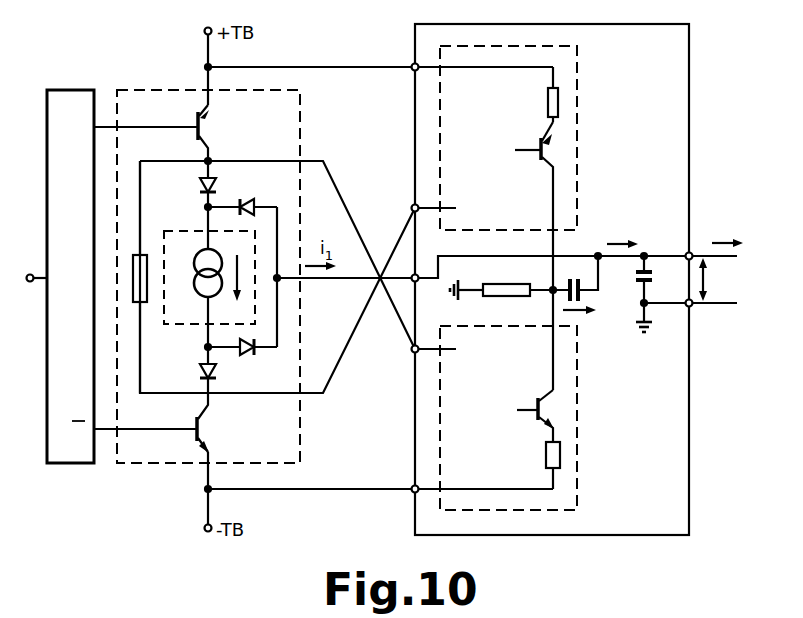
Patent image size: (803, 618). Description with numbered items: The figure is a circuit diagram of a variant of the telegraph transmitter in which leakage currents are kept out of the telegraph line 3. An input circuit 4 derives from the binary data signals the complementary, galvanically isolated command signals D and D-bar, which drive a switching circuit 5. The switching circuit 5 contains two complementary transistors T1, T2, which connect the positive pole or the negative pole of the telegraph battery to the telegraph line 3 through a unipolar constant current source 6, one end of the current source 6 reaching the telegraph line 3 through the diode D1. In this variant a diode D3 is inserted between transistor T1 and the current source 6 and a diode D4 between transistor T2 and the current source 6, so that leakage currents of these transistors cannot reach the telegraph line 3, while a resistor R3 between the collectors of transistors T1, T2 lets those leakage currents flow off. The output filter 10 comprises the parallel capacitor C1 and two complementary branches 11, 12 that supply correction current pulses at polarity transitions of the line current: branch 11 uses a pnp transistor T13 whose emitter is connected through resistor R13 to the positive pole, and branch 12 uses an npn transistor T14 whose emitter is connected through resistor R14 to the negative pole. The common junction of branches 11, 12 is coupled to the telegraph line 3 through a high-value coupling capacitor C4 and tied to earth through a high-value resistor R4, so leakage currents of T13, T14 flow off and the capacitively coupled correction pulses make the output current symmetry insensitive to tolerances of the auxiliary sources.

The telegraph line 3 is at (756, 288).
The input circuit 4 is at (68, 90).
The switching circuit 5 is at (301, 133).
The unipolar constant current source 6 is at (194, 258).
The output filter 10 is at (690, 88).
The complementary branch 11 is at (582, 84).
The complementary branch 12 is at (578, 478).
The transistor T1 is at (205, 126).
The transistor T2 is at (207, 431).
The diode D1 is at (247, 355).
The diode D3 is at (200, 184).
The diode D4 is at (200, 372).
The resistor R3 is at (147, 297).
The high-value resistor R4 is at (491, 283).
The high-value coupling capacitor C4 is at (581, 285).
The parallel capacitor C1 is at (646, 283).
The resistor R13 is at (548, 96).
The pnp transistor T13 is at (541, 158).
The npn transistor T14 is at (538, 401).
The resistor R14 is at (546, 454).